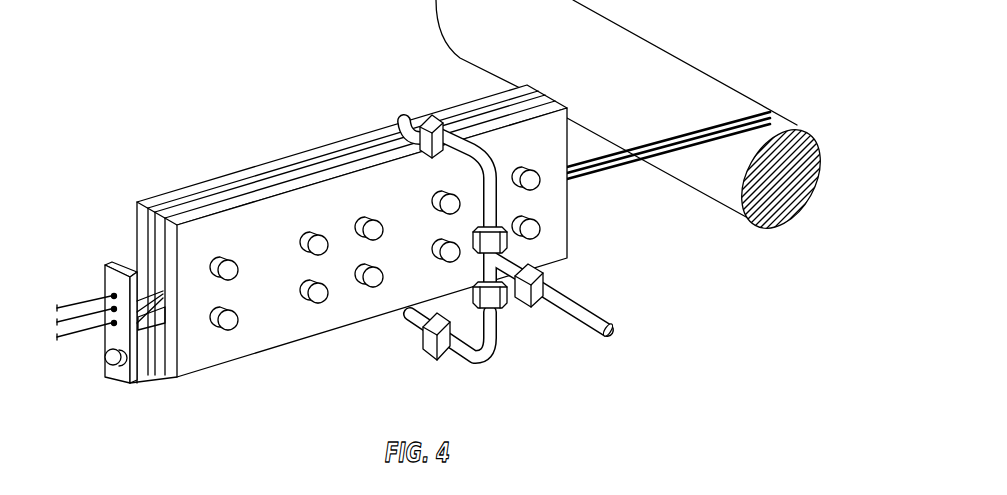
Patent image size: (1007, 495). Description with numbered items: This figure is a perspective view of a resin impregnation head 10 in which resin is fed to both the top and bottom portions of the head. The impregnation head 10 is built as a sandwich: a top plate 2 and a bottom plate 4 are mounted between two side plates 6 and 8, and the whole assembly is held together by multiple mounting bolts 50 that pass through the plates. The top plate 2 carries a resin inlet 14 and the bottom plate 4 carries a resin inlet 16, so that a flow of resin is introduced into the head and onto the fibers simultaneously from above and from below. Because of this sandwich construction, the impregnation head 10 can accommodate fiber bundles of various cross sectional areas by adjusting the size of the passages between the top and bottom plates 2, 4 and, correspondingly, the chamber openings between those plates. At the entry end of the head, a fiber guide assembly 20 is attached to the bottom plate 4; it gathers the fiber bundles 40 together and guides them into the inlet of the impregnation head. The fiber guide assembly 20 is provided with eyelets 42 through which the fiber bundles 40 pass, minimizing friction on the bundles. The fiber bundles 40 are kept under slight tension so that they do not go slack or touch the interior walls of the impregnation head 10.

The impregnation head 10 is at (240, 82).
The top plate 2 is at (342, 239).
The side plate 8 is at (352, 234).
The side plate 6 is at (270, 241).
The bottom plate 4 is at (185, 345).
The fiber guide assembly 20 is at (155, 338).
The fiber bundles 40 is at (69, 303).
The eyelets 42 is at (84, 279).
The resin inlet 14 is at (398, 124).
The resin inlet 16 is at (402, 336).
The mounting bolts 50 is at (416, 272).